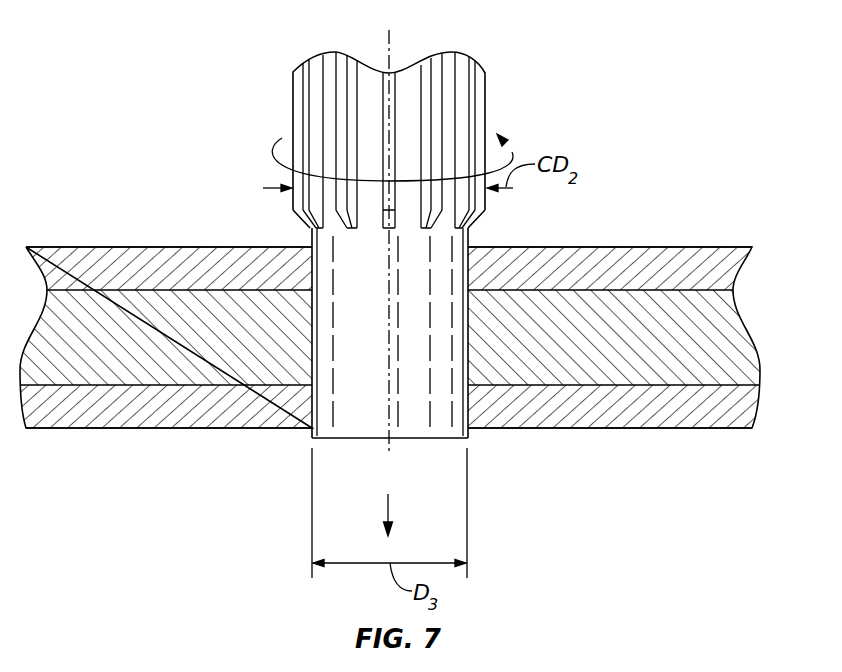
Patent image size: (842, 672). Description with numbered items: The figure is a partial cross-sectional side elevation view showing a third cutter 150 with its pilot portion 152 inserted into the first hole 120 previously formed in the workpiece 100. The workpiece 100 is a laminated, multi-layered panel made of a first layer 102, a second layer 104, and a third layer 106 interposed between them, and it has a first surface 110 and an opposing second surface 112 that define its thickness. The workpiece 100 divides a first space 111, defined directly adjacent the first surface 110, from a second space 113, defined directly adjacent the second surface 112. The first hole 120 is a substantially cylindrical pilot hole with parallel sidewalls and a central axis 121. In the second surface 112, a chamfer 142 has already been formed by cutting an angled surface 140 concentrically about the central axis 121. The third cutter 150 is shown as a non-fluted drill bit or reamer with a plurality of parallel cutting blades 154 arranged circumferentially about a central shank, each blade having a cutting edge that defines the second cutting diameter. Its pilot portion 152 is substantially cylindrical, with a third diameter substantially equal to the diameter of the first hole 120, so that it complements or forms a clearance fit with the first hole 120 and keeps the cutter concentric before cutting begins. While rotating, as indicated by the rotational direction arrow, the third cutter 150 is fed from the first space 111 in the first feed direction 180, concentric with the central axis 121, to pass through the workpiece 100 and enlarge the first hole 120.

The workpiece 100 is at (676, 215).
The first layer 102 is at (568, 264).
The second layer 104 is at (642, 408).
The third layer 106 is at (717, 345).
The first surface 110 is at (97, 247).
The first space 111 is at (197, 196).
The second surface 112 is at (97, 430).
The second space 113 is at (222, 540).
The first hole 120 is at (316, 269).
The central axis 121 is at (390, 52).
The angled surface 140 is at (297, 431).
The chamfer 142 is at (471, 432).
The third cutter 150 is at (497, 98).
The pilot portion 152 is at (407, 427).
The cutting blades 154 is at (293, 106).
The first feed direction 180 is at (388, 507).